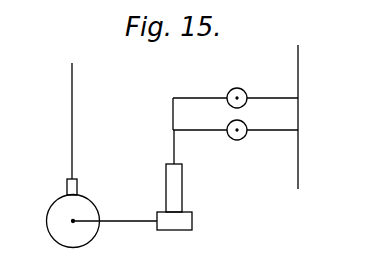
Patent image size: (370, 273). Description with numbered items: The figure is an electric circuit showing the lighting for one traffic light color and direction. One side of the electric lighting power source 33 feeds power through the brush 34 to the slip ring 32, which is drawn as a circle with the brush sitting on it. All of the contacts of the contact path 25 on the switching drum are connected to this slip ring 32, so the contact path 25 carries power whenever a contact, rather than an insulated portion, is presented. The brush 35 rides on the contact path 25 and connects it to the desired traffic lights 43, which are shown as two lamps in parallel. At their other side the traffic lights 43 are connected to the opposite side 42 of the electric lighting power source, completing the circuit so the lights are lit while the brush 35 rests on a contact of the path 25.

The contact path 25 is at (192, 219).
The slip ring 32 is at (89, 212).
The electric lighting power source 33 is at (72, 100).
The brush 34 is at (67, 186).
The brush 35 is at (177, 187).
The opposite side of the electric lighting power source 42 is at (298, 85).
The traffic lights 43 is at (250, 76).